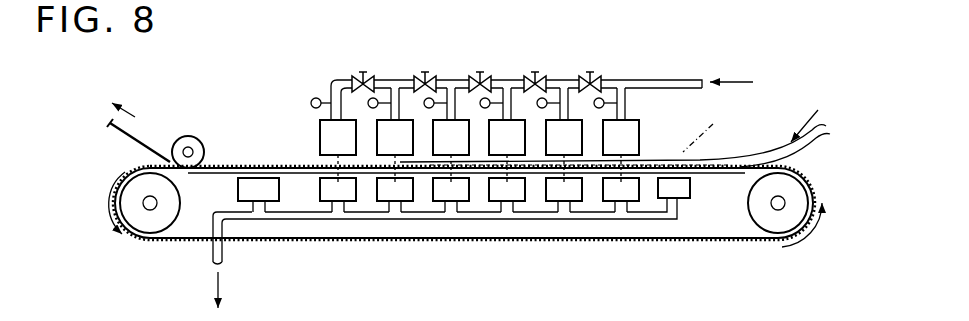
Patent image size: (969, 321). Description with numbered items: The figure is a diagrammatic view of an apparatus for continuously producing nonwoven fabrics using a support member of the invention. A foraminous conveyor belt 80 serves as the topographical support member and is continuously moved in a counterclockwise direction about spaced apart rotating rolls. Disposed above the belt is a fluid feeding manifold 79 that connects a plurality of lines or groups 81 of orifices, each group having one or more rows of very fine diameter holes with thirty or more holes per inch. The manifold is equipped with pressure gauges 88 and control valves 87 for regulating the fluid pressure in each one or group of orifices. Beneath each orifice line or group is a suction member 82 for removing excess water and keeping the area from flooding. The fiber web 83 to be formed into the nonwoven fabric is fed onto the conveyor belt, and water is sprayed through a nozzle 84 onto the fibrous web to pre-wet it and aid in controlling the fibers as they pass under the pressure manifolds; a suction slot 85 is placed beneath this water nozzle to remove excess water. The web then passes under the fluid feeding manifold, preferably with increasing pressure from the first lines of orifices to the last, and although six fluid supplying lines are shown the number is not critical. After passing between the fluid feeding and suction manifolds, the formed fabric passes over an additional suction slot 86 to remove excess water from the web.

The fluid feeding manifold 79 is at (650, 80).
The foraminous conveyor belt 80 is at (572, 240).
The lines or groups of orifices 81 is at (377, 147).
The suction member 82 is at (413, 198).
The fiber web 83 is at (823, 147).
The nozzle 84 is at (714, 127).
The suction slot 85 is at (692, 190).
The additional suction slot 86 is at (237, 188).
The control valves 87 is at (420, 76).
The pressure gauges 88 is at (310, 103).